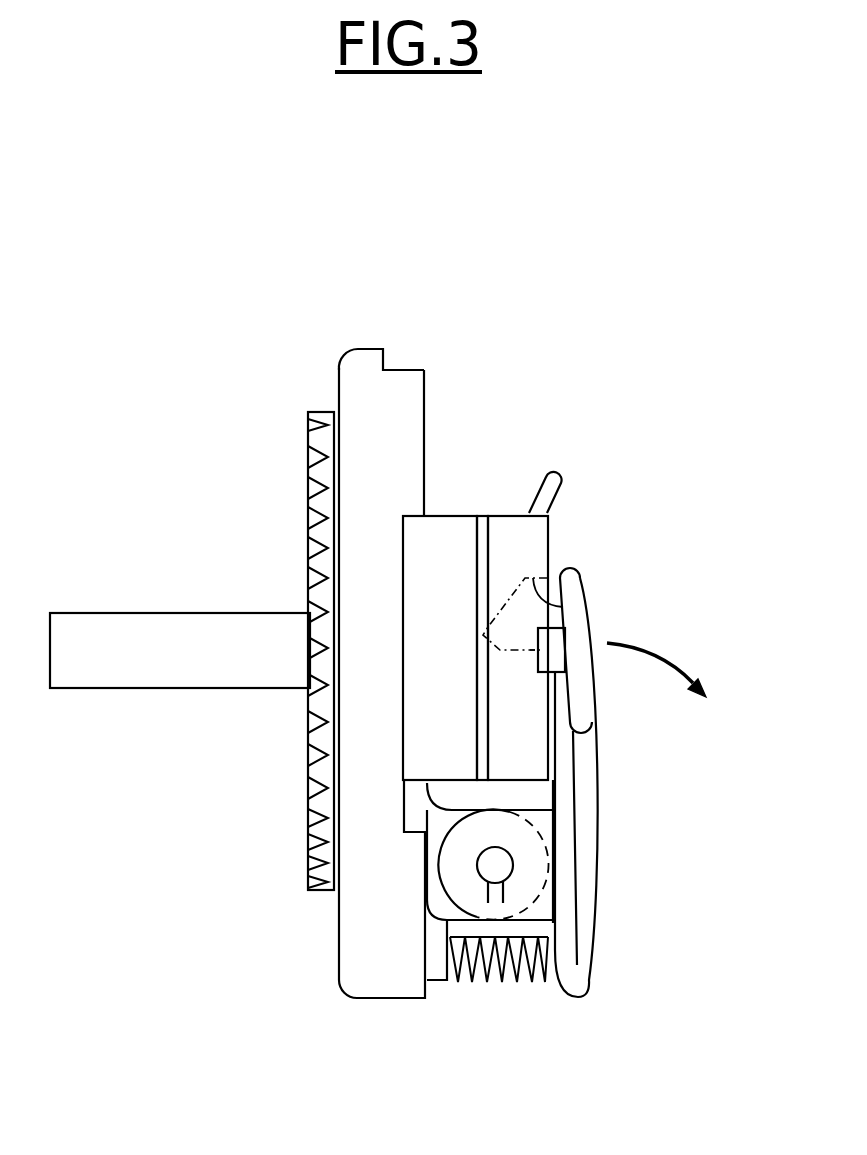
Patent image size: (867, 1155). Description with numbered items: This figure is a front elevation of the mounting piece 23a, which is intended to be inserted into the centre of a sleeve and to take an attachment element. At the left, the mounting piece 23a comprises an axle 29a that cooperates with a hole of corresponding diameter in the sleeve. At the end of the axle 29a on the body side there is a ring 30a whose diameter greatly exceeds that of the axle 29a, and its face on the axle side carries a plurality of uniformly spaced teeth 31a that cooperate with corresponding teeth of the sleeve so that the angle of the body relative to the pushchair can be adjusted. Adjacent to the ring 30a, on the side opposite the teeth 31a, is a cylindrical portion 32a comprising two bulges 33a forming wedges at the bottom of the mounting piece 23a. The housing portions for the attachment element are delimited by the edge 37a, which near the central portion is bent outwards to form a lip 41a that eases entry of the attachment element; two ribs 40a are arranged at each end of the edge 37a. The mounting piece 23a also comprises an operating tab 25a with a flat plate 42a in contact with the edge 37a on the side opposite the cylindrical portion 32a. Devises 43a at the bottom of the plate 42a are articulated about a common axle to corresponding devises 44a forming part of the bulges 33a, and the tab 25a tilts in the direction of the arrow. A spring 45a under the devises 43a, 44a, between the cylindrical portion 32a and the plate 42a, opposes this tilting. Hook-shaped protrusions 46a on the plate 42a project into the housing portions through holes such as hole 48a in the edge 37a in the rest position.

The axle 29a is at (117, 650).
The ring 30a is at (323, 410).
The teeth 31a is at (310, 542).
The cylindrical portion 32a is at (365, 349).
The bulges 33a is at (373, 942).
The edge 37a is at (435, 590).
The ribs 40a is at (483, 530).
The lip 41a is at (560, 480).
The protrusions 46a is at (515, 617).
The mounting piece 23a is at (548, 560).
The hole 48a is at (550, 606).
The flat plate 42a is at (582, 827).
The operating tab 25a is at (600, 773).
The devises 44a is at (440, 898).
The devises 43a is at (542, 910).
The spring 45a is at (488, 973).